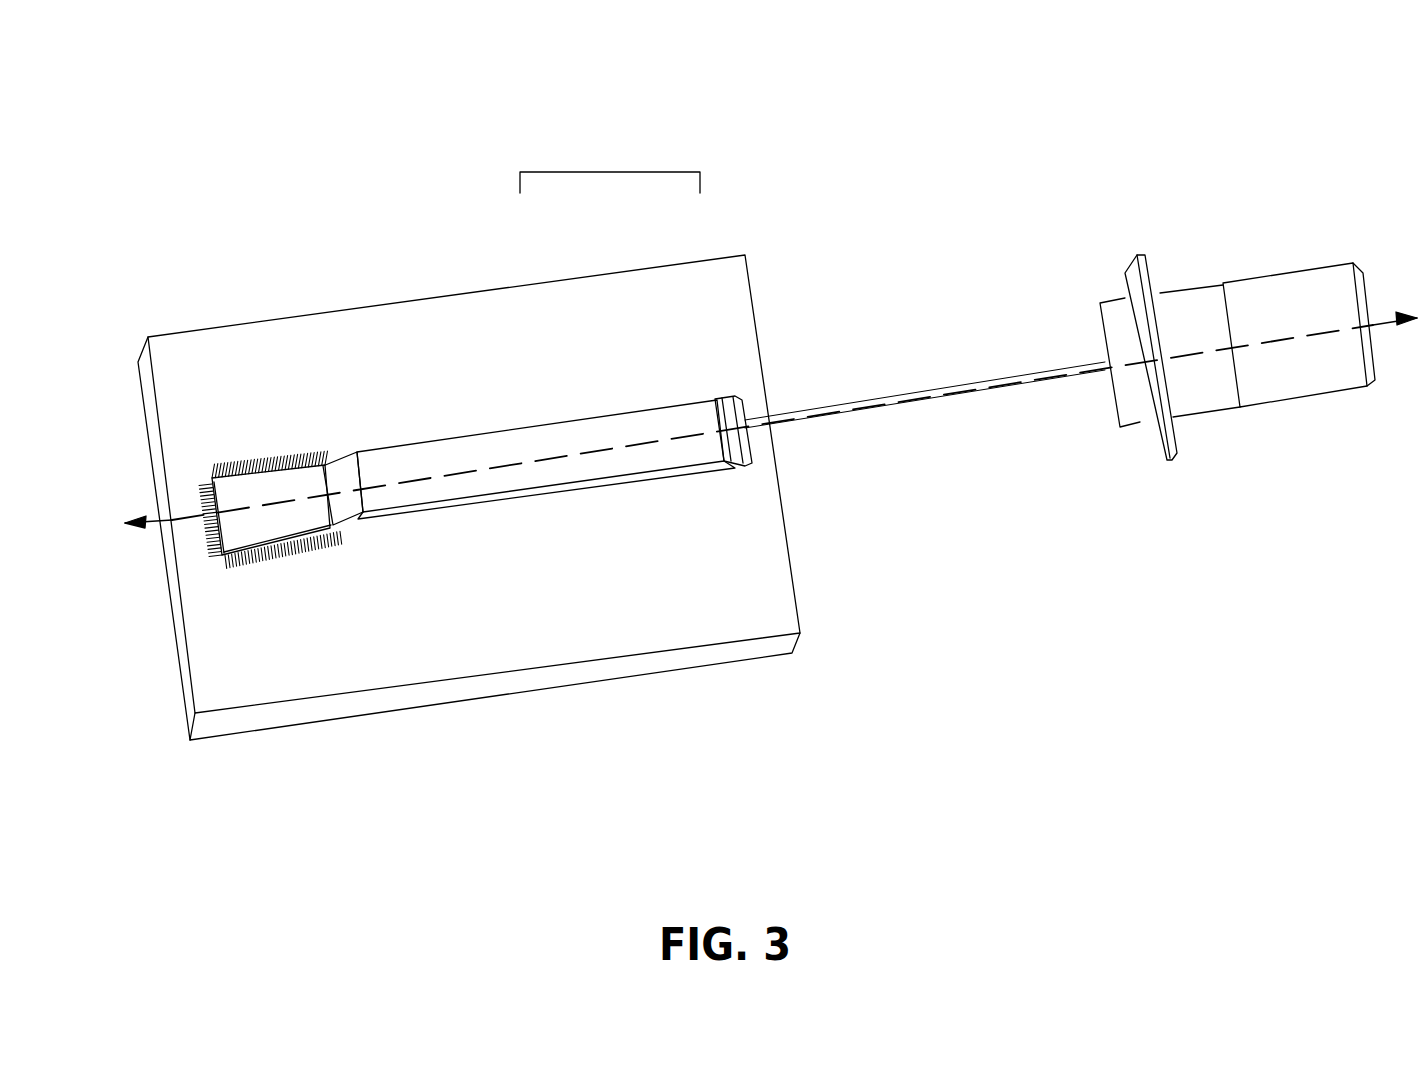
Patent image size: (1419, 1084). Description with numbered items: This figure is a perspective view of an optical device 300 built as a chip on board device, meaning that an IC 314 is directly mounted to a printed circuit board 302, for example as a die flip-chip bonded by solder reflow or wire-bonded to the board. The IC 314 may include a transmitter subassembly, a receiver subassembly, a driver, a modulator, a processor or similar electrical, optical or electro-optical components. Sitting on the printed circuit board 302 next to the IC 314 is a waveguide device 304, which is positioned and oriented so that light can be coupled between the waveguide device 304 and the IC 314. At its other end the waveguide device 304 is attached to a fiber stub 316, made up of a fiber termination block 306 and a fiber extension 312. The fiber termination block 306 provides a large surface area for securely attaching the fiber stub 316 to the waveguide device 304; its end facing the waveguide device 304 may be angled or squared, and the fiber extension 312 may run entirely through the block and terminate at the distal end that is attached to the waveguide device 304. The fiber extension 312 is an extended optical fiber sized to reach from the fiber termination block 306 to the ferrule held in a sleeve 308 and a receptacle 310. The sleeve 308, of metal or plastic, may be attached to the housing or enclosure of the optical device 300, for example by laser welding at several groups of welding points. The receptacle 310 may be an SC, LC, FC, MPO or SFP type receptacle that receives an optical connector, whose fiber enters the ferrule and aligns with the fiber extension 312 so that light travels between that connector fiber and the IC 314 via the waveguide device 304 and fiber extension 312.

The optical device 300 is at (222, 70).
The printed circuit board 302 is at (267, 323).
The waveguide device 304 is at (488, 431).
The fiber termination block 306 is at (733, 397).
The sleeve 308 is at (1117, 302).
The receptacle 310 is at (1310, 270).
The fiber extension 312 is at (853, 400).
The IC 314 is at (221, 558).
The fiber stub 316 is at (613, 170).